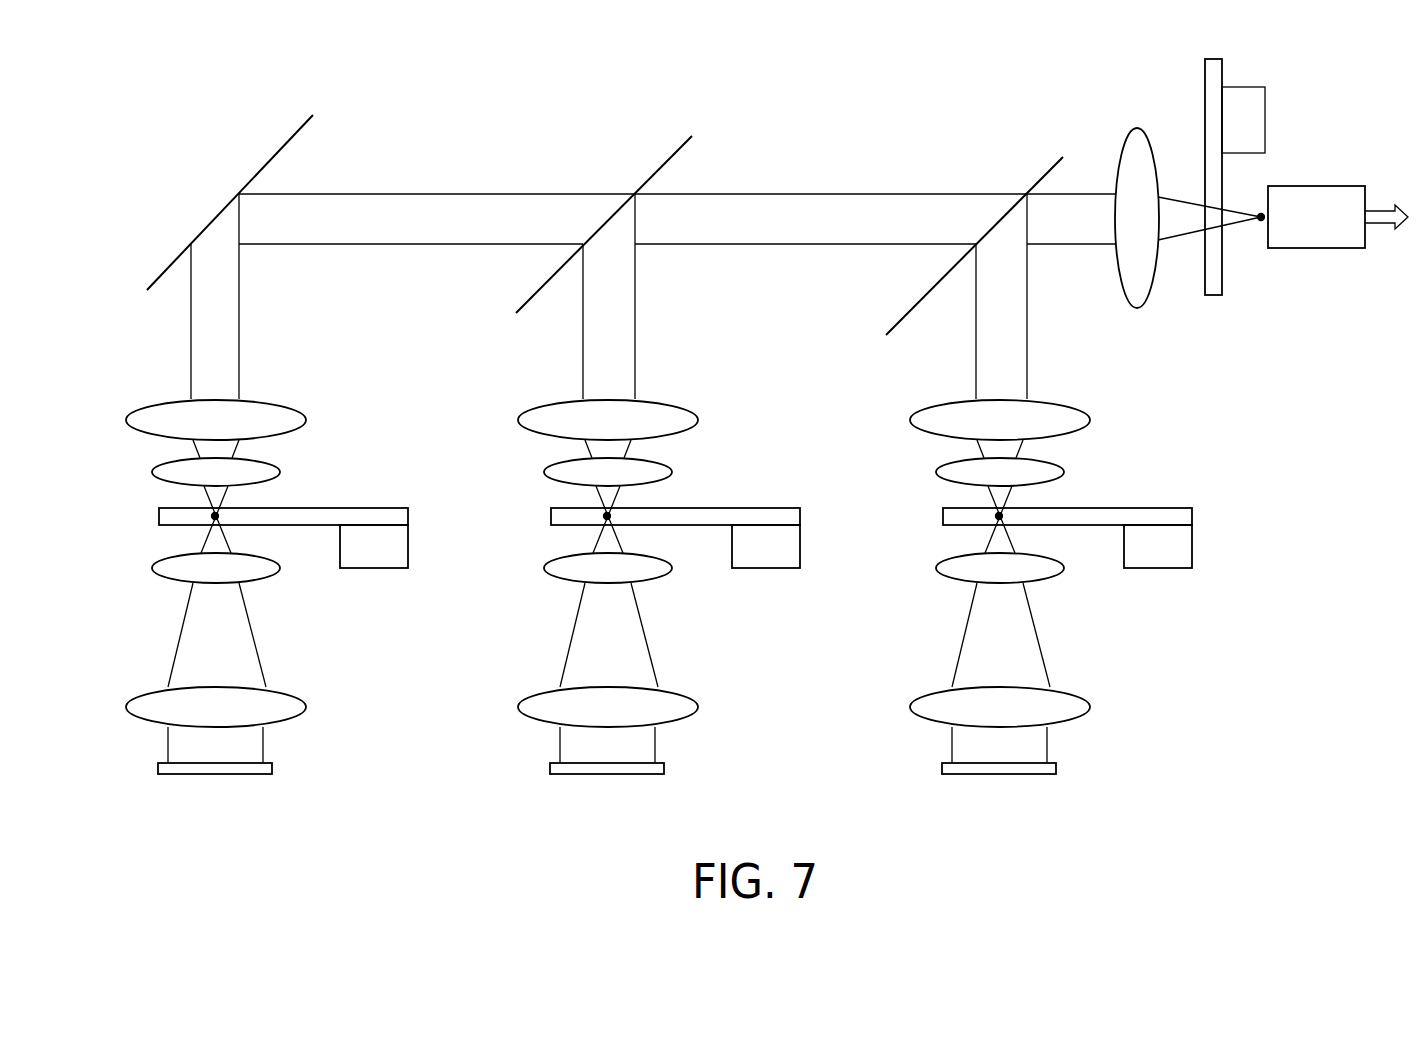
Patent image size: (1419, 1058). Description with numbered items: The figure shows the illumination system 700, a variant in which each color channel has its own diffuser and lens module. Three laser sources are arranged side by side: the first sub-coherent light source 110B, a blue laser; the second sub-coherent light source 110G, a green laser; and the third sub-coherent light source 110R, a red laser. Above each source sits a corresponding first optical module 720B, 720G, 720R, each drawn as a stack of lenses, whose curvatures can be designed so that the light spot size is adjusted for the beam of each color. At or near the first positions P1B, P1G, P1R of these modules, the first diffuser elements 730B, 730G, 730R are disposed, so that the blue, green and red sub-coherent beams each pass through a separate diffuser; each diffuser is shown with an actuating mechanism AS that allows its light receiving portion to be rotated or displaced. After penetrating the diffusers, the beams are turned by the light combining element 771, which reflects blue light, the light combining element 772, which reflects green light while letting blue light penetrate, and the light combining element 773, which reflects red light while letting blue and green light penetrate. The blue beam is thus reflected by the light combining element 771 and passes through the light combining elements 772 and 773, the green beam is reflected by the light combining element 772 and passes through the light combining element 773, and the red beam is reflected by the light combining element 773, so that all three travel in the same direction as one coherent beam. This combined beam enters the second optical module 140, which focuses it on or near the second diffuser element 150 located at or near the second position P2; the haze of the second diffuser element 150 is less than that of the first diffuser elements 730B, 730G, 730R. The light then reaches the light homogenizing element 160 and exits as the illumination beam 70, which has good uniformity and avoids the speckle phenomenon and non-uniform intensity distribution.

The illumination system 700 is at (1383, 806).
The light combining element 771 is at (296, 135).
The light combining element 772 is at (675, 153).
The light combining element 773 is at (1052, 170).
The second optical module 140 is at (1137, 150).
The second diffuser element 150 is at (1213, 68).
The light homogenizing element 160 is at (1318, 197).
The second position P2 is at (1259, 223).
The illumination beam 70 is at (1380, 229).
The first optical module 720B is at (265, 595).
The first optical module 720G is at (657, 595).
The first optical module 720R is at (1049, 595).
The first diffuser element 730B is at (408, 517).
The first diffuser element 730G is at (800, 517).
The first diffuser element 730R is at (1192, 517).
The first position P1B is at (219, 513).
The first position P1G is at (611, 513).
The first position P1R is at (1003, 513).
The first sub-coherent light source 110B is at (216, 774).
The second sub-coherent light source 110G is at (608, 774).
The third sub-coherent light source 110R is at (1000, 774).
The actuating mechanism AS is at (401, 548).